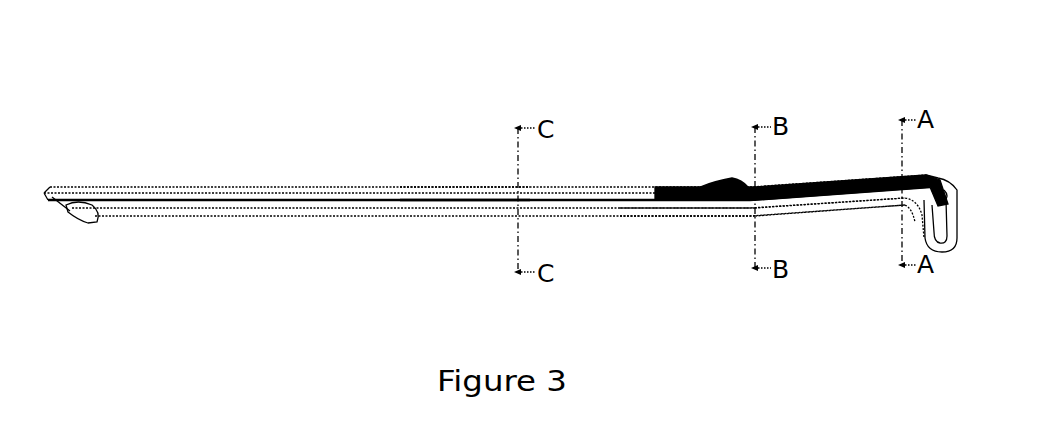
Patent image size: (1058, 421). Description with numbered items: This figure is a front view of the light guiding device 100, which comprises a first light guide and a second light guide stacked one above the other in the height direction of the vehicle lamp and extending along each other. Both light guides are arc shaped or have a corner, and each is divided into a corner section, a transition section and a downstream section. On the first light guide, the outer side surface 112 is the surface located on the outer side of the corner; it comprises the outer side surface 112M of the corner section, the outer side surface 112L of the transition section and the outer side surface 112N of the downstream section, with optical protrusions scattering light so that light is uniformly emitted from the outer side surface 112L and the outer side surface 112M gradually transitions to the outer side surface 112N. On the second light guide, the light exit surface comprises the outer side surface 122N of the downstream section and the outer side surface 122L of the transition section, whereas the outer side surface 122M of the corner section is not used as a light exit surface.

The light guiding device 100 is at (543, 83).
The outer side surface 112 is at (288, 188).
The outer side surface of the downstream section 112N is at (488, 190).
The outer side surface of the transition section 112L is at (690, 186).
The outer side surface of the corner section 112M is at (882, 172).
The outer side surface of the downstream section of the second light guide 122N is at (492, 218).
The outer side surface of the transition section of the second light guide 122L is at (694, 218).
The outer side surface of the corner section of the second light guide 122M is at (890, 210).